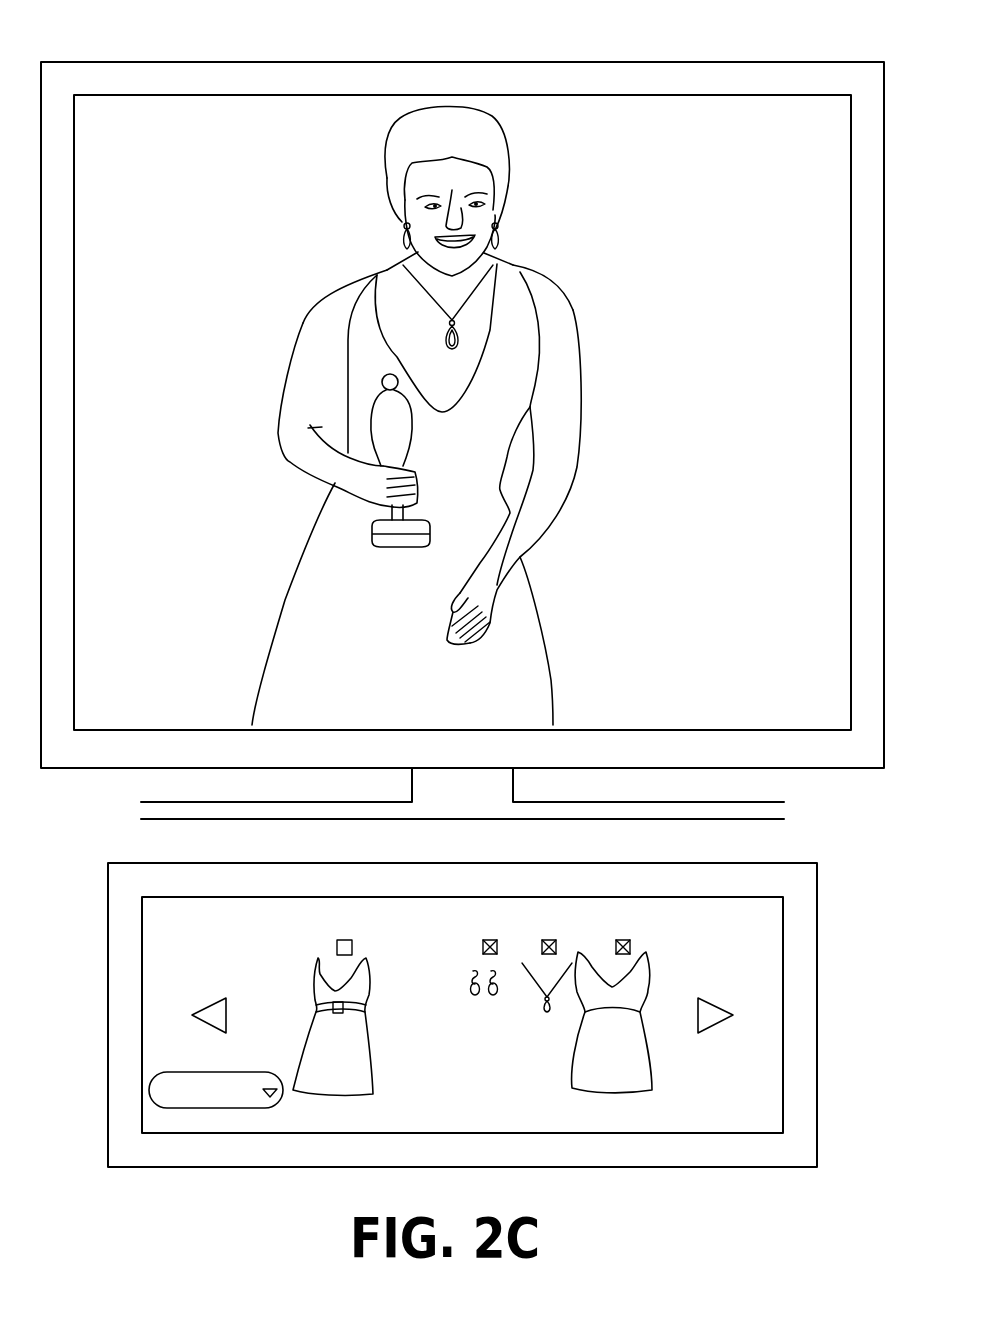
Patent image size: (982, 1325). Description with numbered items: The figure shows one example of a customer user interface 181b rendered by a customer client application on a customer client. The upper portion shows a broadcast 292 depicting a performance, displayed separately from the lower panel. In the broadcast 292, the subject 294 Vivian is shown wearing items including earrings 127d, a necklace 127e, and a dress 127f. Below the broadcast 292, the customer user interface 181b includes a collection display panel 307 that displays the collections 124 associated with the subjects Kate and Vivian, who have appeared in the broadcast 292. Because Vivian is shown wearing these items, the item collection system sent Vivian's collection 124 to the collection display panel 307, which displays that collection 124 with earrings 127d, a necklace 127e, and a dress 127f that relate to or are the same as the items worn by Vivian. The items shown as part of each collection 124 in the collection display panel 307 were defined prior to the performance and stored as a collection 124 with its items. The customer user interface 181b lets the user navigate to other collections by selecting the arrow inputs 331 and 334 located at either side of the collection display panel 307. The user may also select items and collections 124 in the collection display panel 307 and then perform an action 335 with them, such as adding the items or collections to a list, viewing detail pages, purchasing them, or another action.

The broadcast 292 is at (208, 128).
The subject 294 is at (527, 165).
The earrings 127d is at (381, 240).
The necklace 127e is at (418, 307).
The dress 127f is at (358, 360).
The customer user interface 181b is at (816, 844).
The collection display panel 307 is at (170, 923).
The collections 124 is at (499, 907).
The arrow input 331 is at (163, 1011).
The arrow input 334 is at (764, 1020).
The action 335 is at (210, 1122).